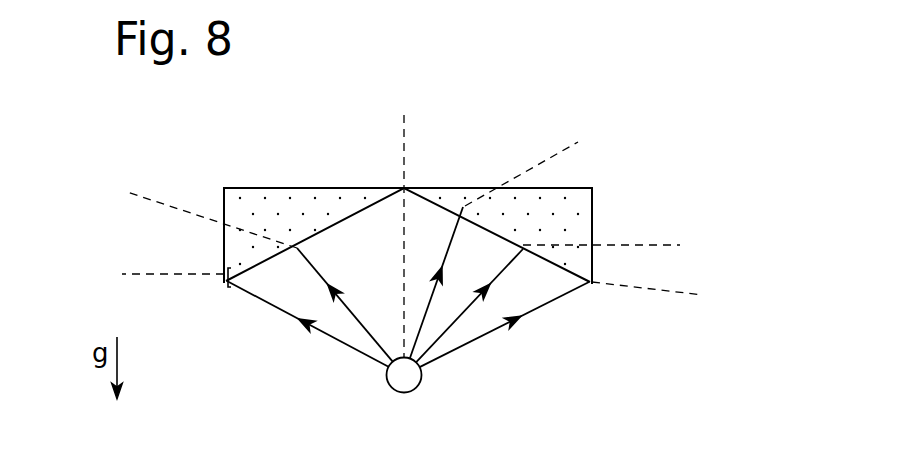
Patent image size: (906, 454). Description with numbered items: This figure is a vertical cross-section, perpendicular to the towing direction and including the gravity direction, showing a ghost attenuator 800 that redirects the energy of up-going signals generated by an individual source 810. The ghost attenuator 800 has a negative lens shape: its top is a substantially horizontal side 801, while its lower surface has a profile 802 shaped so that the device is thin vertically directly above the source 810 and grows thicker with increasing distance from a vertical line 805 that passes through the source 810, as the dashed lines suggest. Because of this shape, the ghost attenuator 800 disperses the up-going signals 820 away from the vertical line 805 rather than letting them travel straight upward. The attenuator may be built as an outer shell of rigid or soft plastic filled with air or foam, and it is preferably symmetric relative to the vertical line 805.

The ghost attenuator 800 is at (594, 207).
The substantially horizontal side 801 is at (553, 198).
The lower surface profile 802 is at (228, 284).
The vertical line 805 is at (405, 158).
The individual source 810 is at (422, 376).
The up-going signals 820 is at (412, 254).